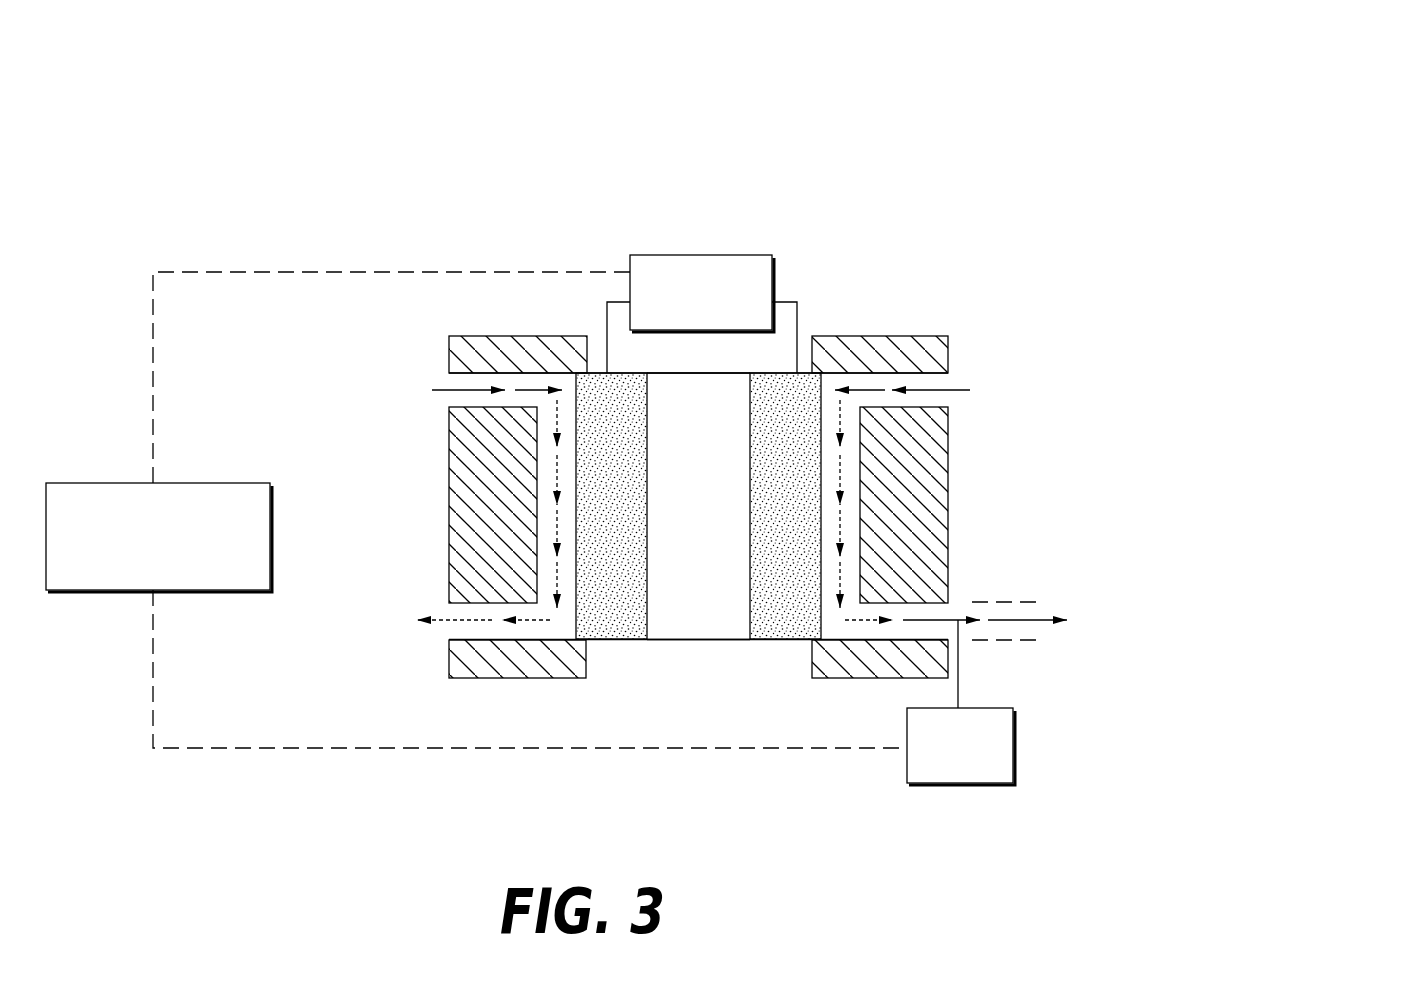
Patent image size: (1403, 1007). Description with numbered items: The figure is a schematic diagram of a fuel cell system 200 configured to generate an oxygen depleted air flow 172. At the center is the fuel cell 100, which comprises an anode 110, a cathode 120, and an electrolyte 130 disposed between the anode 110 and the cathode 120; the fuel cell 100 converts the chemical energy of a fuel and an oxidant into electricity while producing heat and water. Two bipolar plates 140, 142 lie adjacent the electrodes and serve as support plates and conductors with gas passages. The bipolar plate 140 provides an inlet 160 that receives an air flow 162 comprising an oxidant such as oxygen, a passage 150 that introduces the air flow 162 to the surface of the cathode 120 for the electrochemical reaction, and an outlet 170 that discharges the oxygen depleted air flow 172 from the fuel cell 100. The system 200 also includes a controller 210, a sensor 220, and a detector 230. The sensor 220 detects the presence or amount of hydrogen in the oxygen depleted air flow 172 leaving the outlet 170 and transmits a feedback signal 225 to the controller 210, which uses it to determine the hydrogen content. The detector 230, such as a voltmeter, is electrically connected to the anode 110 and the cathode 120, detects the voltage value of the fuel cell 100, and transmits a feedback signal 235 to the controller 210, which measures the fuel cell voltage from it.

The fuel cell system 200 is at (918, 134).
The fuel cell 100 is at (532, 255).
The anode 110 is at (617, 640).
The cathode 120 is at (782, 640).
The electrolyte 130 is at (698, 640).
The bipolar plate 140 is at (933, 515).
The bipolar plate 142 is at (473, 488).
The passage 150 is at (835, 622).
The inlet 160 is at (947, 380).
The air flow 162 is at (761, 496).
The outlet 170 is at (938, 610).
The oxygen depleted air flow 172 is at (1118, 619).
The controller 210 is at (133, 569).
The sensor 220 is at (943, 769).
The feedback signal 225 is at (463, 750).
The detector 230 is at (684, 319).
The feedback signal 235 is at (348, 272).